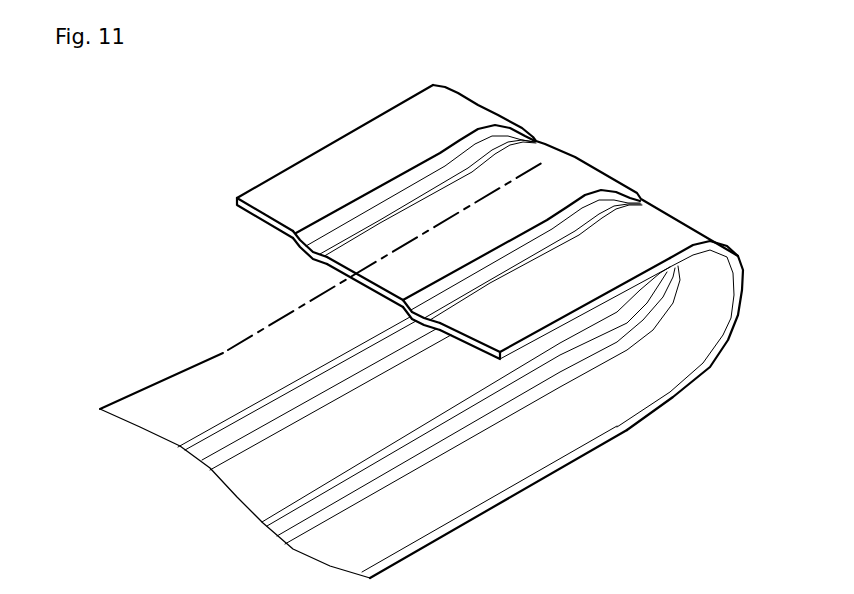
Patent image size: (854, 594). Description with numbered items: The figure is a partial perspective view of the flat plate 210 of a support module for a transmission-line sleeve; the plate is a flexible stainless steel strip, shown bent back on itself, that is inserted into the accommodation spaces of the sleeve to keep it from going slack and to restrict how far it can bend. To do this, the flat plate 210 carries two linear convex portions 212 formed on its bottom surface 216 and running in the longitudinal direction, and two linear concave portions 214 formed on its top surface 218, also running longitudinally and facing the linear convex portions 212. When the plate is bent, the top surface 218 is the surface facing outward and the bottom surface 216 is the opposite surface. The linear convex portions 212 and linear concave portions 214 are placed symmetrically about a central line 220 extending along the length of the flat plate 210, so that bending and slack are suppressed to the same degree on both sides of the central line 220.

The flat plate 210 is at (161, 110).
The linear convex portion 212 is at (313, 258).
The linear concave portion 214 is at (358, 230).
The bottom surface 216 is at (409, 307).
The top surface 218 is at (409, 310).
The central line 220 is at (206, 353).